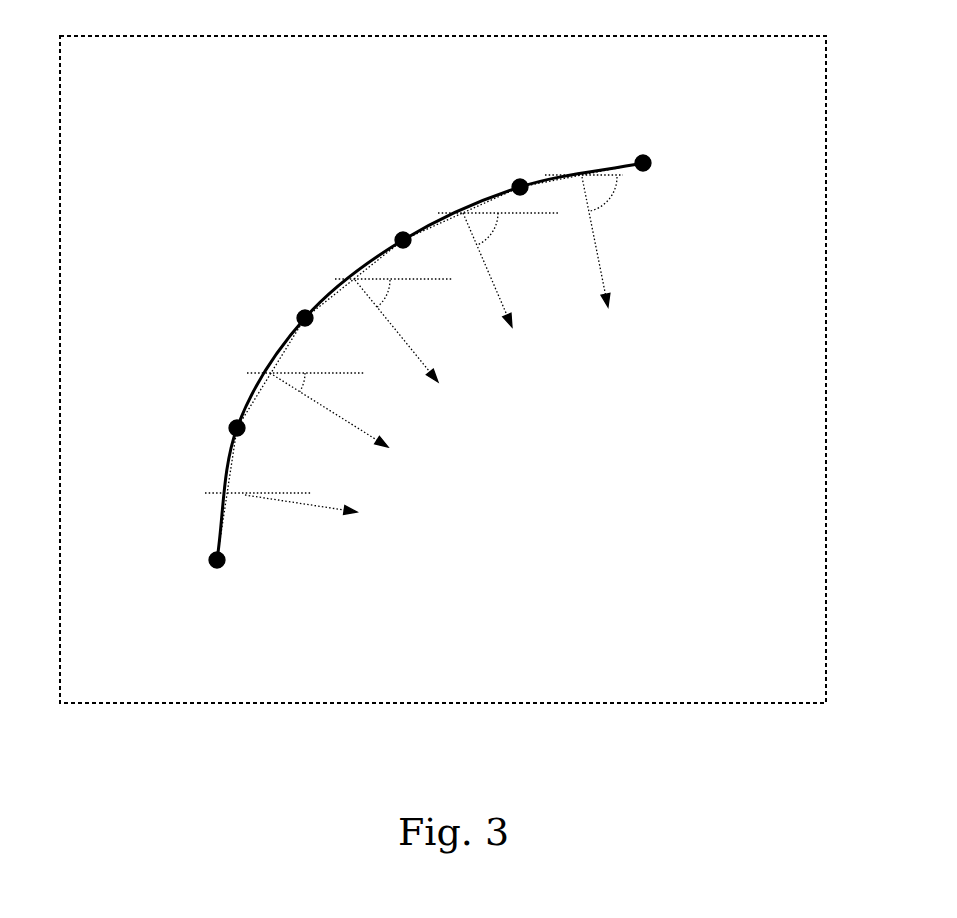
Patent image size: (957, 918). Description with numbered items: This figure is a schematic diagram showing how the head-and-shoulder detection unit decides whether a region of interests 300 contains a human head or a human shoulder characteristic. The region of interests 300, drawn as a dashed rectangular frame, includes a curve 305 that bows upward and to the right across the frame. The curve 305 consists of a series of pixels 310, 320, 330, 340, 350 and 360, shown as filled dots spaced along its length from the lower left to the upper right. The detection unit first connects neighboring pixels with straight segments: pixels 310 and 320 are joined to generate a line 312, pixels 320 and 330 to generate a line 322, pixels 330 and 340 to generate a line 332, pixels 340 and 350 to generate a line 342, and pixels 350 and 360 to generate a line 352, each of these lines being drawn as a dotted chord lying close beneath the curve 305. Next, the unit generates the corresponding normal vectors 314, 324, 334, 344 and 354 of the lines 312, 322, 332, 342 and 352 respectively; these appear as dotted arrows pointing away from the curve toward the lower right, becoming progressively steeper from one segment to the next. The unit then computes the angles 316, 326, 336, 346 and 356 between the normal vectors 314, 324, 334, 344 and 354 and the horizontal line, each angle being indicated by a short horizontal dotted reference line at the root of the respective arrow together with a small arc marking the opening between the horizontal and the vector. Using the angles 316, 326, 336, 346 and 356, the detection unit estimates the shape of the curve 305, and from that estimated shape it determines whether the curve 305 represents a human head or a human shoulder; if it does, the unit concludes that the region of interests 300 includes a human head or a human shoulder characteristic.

The region of interests 300 is at (828, 158).
The curve 305 is at (213, 520).
The pixel 310 is at (212, 566).
The line 312 is at (222, 542).
The normal vector 314 is at (318, 505).
The angle 316 is at (262, 494).
The pixel 320 is at (230, 428).
The line 322 is at (253, 390).
The normal vector 324 is at (365, 431).
The angle 326 is at (305, 393).
The pixel 330 is at (298, 322).
The line 332 is at (335, 292).
The normal vector 334 is at (400, 338).
The angle 336 is at (383, 302).
The pixel 340 is at (395, 240).
The line 342 is at (438, 222).
The normal vector 344 is at (508, 298).
The angle 346 is at (488, 230).
The pixel 350 is at (510, 188).
The line 352 is at (600, 170).
The normal vector 354 is at (603, 278).
The angle 356 is at (590, 196).
The pixel 360 is at (656, 160).